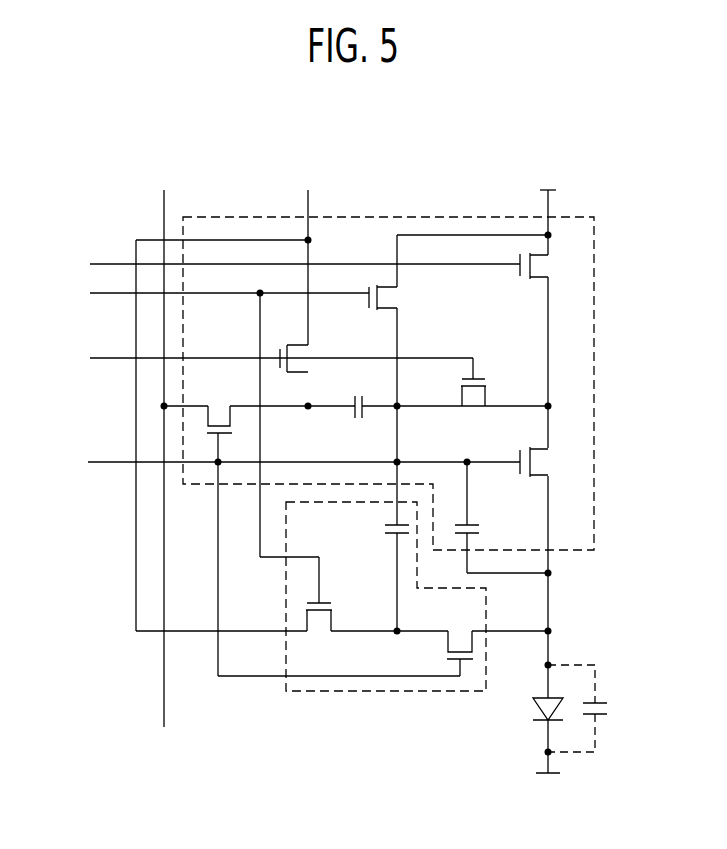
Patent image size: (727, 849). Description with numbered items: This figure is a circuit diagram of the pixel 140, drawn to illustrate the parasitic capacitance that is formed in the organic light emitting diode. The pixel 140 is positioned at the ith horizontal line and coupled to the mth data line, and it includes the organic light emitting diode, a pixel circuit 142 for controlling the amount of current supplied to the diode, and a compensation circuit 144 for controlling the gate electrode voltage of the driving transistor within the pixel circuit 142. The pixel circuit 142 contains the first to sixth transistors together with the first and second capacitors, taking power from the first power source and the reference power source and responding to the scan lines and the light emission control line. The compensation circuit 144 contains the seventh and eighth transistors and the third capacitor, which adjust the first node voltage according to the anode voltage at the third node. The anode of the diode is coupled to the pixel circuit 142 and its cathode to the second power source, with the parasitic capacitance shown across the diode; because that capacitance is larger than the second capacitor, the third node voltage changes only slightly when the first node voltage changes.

The pixel 140 is at (571, 132).
The pixel circuit 142 is at (594, 354).
The compensation circuit 144 is at (345, 693).